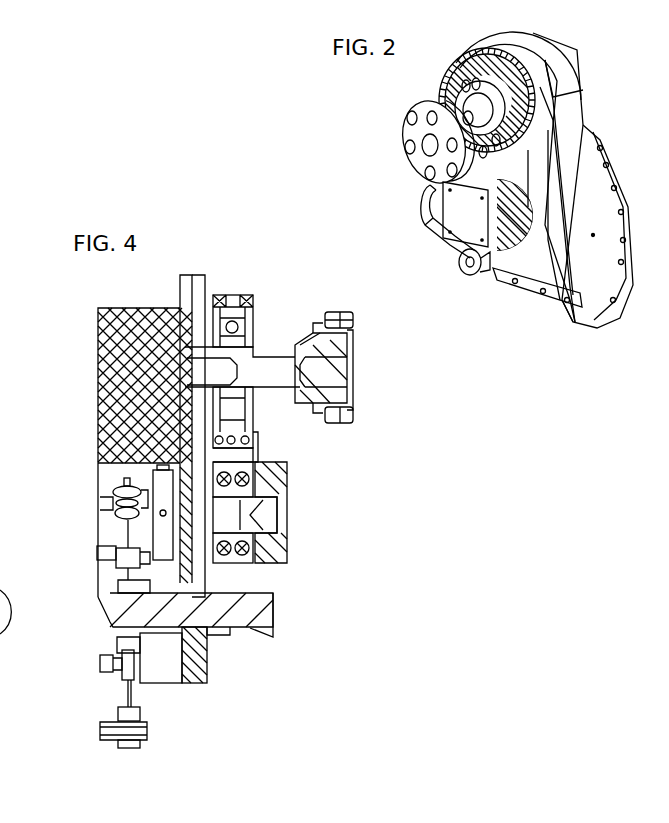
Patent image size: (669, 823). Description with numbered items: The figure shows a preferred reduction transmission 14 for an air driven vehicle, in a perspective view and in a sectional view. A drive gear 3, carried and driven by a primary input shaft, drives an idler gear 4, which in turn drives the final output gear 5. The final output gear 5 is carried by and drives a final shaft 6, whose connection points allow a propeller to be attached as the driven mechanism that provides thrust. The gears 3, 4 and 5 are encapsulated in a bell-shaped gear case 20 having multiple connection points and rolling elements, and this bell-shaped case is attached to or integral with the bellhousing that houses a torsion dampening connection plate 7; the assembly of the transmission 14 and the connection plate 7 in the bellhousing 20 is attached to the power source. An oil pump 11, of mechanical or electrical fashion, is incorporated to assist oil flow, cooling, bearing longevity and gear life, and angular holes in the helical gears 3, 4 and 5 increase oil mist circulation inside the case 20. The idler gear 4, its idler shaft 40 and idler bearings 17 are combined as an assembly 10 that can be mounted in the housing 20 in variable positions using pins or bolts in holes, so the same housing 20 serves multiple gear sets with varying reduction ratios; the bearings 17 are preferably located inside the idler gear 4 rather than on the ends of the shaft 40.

In FIG. 2, the drive gear 3 is at (490, 272).
In FIG. 4, the drive gear 3 is at (236, 641).
In FIG. 2, the idler gear 4 is at (517, 257).
In FIG. 4, the idler gear 4 is at (263, 448).
In FIG. 2, the final output gear 5 is at (445, 75).
In FIG. 4, the final output gear 5 is at (252, 294).
In FIG. 2, the final shaft 6 is at (470, 117).
In FIG. 4, the final shaft 6 is at (272, 368).
In FIG. 4, the torsion dampening connection plate 7 is at (101, 692).
In FIG. 4, the assembly 10 is at (200, 490).
In FIG. 4, the oil pump 11 is at (160, 492).
In FIG. 2, the reduction transmission 14 is at (577, 333).
In FIG. 4, the reduction transmission 14 is at (301, 661).
In FIG. 4, the idler bearings 17 is at (249, 480).
In FIG. 2, the bell-shaped gear case 20 is at (593, 235).
In FIG. 4, the idler shaft 40 is at (256, 518).